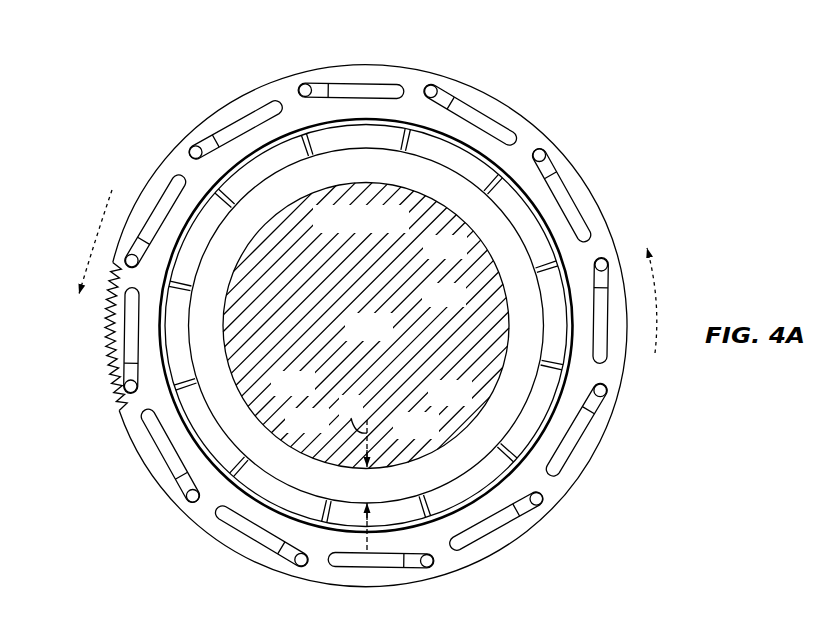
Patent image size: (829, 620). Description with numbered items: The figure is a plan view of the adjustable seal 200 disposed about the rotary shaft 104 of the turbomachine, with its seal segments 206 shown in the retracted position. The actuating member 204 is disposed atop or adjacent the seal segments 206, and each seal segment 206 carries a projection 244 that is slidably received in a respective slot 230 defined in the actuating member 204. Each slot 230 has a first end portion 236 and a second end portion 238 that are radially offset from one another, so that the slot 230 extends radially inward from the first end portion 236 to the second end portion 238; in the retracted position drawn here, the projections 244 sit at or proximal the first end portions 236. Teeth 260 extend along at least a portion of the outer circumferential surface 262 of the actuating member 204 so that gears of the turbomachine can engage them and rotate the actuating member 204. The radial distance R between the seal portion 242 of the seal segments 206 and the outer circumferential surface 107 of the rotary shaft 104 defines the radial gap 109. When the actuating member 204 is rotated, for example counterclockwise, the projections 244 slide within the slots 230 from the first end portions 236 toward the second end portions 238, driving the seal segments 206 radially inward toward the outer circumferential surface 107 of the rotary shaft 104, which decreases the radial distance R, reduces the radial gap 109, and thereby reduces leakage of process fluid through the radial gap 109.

The adjustable seal 200 is at (100, 56).
The actuating member 204 is at (158, 162).
The seal segments 206 is at (320, 150).
The seal portion 242 is at (372, 152).
The rotary shaft 104 is at (388, 338).
The outer circumferential surface 107 is at (494, 400).
The radial gap 109 is at (527, 370).
The slots 230 is at (347, 86).
The first end portion 236 is at (307, 83).
The second end portion 238 is at (394, 79).
The projection 244 is at (299, 90).
The teeth 260 is at (107, 320).
The outer circumferential surface 262 is at (145, 183).